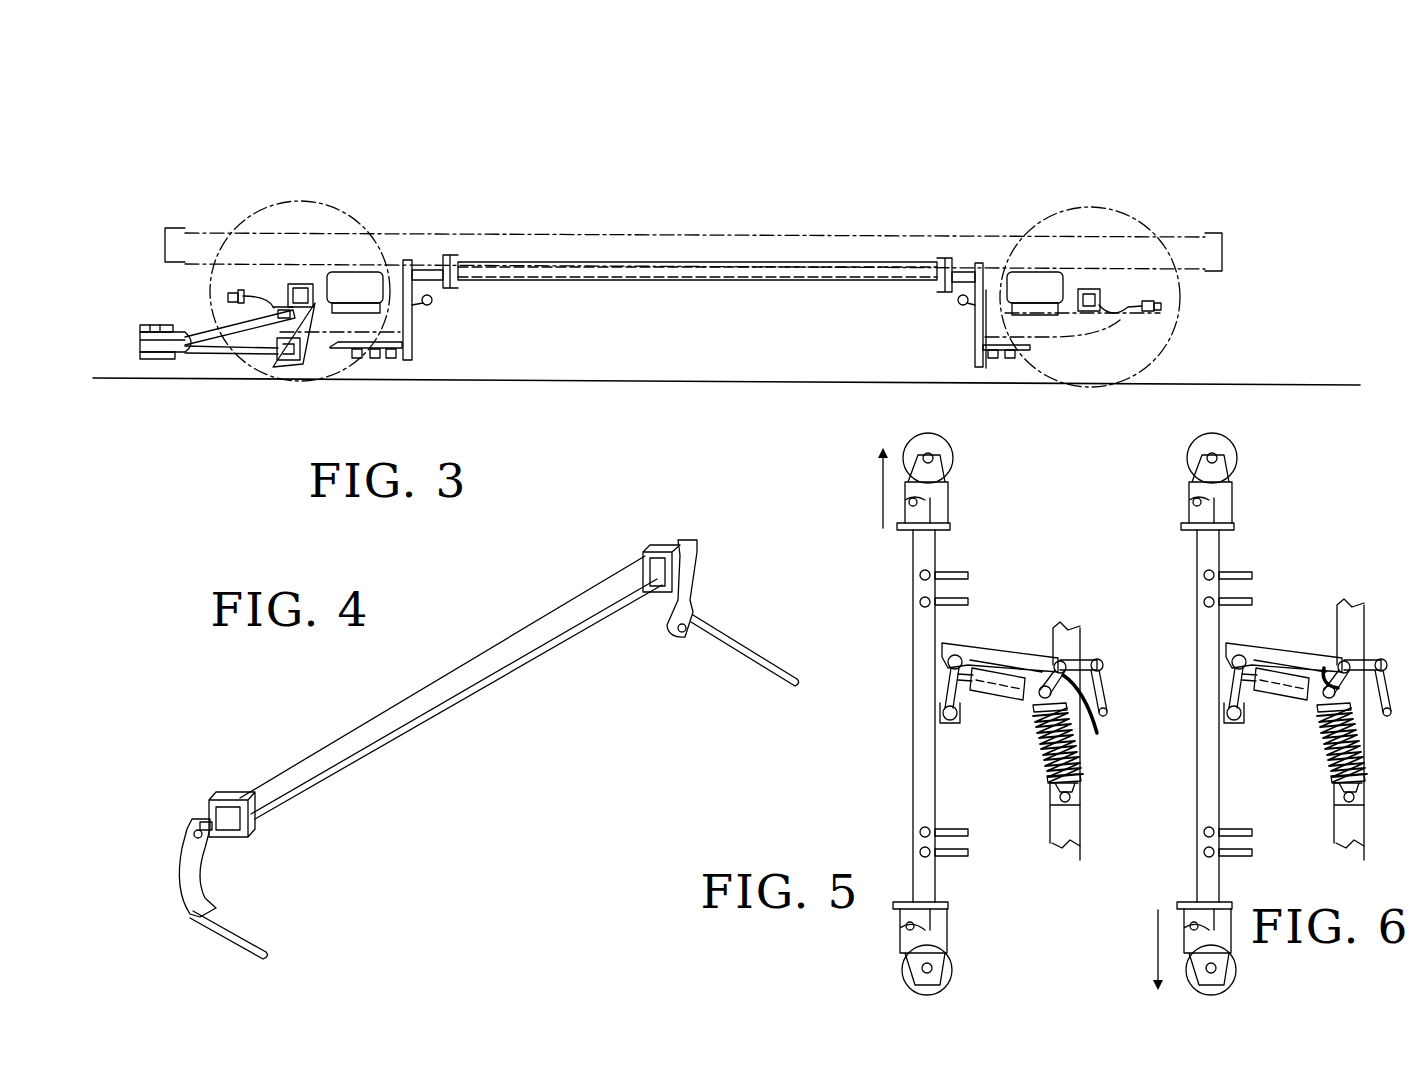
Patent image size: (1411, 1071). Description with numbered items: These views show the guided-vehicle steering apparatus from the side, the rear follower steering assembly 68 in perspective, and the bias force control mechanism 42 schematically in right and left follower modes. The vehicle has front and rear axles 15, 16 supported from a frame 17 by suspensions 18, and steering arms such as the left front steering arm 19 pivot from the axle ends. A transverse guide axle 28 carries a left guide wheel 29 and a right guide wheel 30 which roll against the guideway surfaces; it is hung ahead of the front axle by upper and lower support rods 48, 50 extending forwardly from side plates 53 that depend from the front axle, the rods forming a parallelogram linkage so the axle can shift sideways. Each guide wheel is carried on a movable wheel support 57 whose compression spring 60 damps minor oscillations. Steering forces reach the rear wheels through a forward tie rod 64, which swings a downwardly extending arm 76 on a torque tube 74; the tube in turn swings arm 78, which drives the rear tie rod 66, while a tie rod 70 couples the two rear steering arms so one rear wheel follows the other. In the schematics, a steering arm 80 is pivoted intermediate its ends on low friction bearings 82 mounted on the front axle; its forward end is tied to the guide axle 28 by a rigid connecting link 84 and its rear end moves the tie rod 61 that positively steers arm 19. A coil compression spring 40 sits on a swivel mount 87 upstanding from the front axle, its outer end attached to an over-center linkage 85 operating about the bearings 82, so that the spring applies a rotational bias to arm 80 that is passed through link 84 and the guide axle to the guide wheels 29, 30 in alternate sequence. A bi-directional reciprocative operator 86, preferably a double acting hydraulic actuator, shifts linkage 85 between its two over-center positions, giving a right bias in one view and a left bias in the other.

In FIG. 3, the front axle 15 is at (300, 284).
In FIG. 3, the rear axle 16 is at (1103, 297).
In FIG. 3, the frame 17 is at (410, 238).
In FIG. 3, the suspensions 18 is at (366, 290).
In FIG. 3, the steering arm 19 is at (338, 348).
In FIG. 5, the guide axle 28 is at (913, 778).
In FIG. 6, the guide axle 28 is at (1197, 716).
In FIG. 3, the left guide wheel 29 is at (140, 343).
In FIG. 5, the left guide wheel 29 is at (952, 972).
In FIG. 6, the left guide wheel 29 is at (1229, 948).
In FIG. 5, the right guide wheel 30 is at (957, 460).
In FIG. 6, the right guide wheel 30 is at (1241, 481).
In FIG. 5, the coil compression spring 40 is at (1038, 747).
In FIG. 6, the coil compression spring 40 is at (1328, 749).
In FIG. 5, the bias force control mechanism 42 is at (1022, 723).
In FIG. 6, the bias force control mechanism 42 is at (1312, 729).
In FIG. 3, the upper support rod 48 is at (213, 355).
In FIG. 3, the lower support rod 50 is at (223, 323).
In FIG. 3, the side plates 53 is at (313, 352).
In FIG. 3, the movable wheel support 57 is at (143, 360).
In FIG. 3, the compression spring 60 is at (377, 358).
In FIG. 5, the tie rod 61 is at (1105, 692).
In FIG. 6, the tie rod 61 is at (1377, 674).
In FIG. 3, the forward tie rod 64 is at (393, 360).
In FIG. 4, the forward tie rod 64 is at (246, 935).
In FIG. 3, the rear tie rod 66 is at (990, 358).
In FIG. 4, the rear tie rod 66 is at (743, 657).
In FIG. 4, the follower steering assembly 68 is at (409, 744).
In FIG. 3, the tie rod 70 is at (1012, 358).
In FIG. 3, the torque tube 74 is at (767, 282).
In FIG. 4, the torque tube 74 is at (398, 712).
In FIG. 3, the arm 76 is at (412, 318).
In FIG. 4, the arm 76 is at (184, 871).
In FIG. 3, the arm 78 is at (977, 327).
In FIG. 4, the arm 78 is at (680, 602).
In FIG. 5, the steering arm 80 is at (970, 643).
In FIG. 6, the steering arm 80 is at (1284, 637).
In FIG. 5, the low friction bearings 82 is at (1063, 663).
In FIG. 6, the low friction bearings 82 is at (1365, 650).
In FIG. 5, the rigid connecting link 84 is at (950, 693).
In FIG. 6, the rigid connecting link 84 is at (1200, 689).
In FIG. 5, the over-center linkage 85 is at (1096, 718).
In FIG. 6, the over-center linkage 85 is at (1319, 657).
In FIG. 3, the bi-directional reciprocative operator 86 is at (358, 358).
In FIG. 5, the bi-directional reciprocative operator 86 is at (983, 693).
In FIG. 6, the bi-directional reciprocative operator 86 is at (1275, 708).
In FIG. 5, the swivel mount 87 is at (1057, 797).
In FIG. 6, the swivel mount 87 is at (1322, 815).